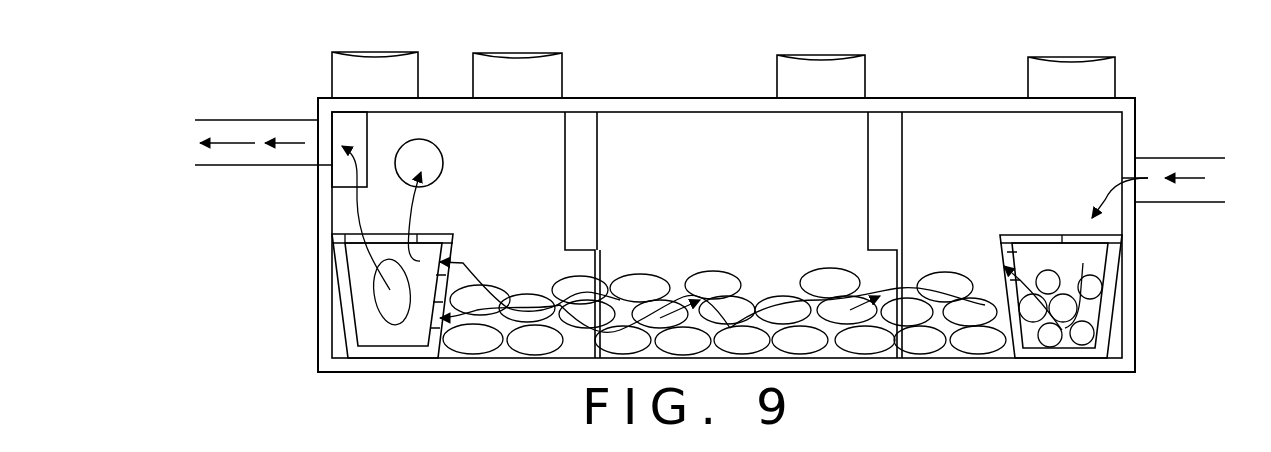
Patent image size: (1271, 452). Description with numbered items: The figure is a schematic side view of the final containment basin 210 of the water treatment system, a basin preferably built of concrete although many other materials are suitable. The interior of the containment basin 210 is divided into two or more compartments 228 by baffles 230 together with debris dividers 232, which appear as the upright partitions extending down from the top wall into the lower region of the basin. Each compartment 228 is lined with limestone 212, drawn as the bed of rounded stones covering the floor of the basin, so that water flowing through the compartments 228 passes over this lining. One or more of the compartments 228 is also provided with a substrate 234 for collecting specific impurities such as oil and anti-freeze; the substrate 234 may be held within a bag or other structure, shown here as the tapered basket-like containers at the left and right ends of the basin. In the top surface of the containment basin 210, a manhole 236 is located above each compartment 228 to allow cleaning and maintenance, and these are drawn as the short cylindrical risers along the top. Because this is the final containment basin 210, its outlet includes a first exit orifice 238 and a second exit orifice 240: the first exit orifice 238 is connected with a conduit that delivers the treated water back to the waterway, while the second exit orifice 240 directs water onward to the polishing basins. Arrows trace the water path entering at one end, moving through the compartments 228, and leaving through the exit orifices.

The containment basin 210 is at (1160, 100).
The limestone 212 is at (723, 339).
The compartment 228 is at (752, 140).
The baffle 230 is at (888, 192).
The debris divider 232 is at (872, 345).
The substrate 234 is at (350, 127).
The manhole 236 is at (523, 53).
The first exit orifice 238 is at (325, 150).
The second exit orifice 240 is at (423, 152).